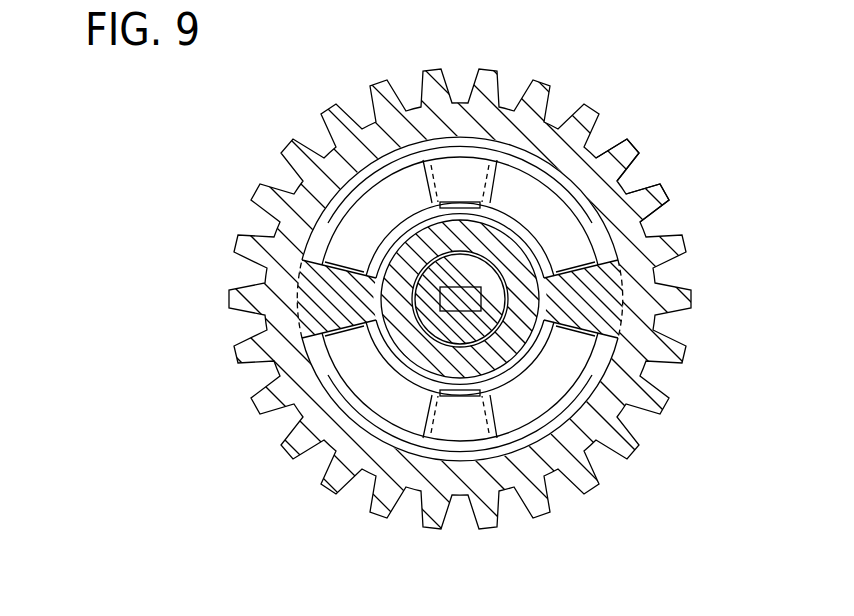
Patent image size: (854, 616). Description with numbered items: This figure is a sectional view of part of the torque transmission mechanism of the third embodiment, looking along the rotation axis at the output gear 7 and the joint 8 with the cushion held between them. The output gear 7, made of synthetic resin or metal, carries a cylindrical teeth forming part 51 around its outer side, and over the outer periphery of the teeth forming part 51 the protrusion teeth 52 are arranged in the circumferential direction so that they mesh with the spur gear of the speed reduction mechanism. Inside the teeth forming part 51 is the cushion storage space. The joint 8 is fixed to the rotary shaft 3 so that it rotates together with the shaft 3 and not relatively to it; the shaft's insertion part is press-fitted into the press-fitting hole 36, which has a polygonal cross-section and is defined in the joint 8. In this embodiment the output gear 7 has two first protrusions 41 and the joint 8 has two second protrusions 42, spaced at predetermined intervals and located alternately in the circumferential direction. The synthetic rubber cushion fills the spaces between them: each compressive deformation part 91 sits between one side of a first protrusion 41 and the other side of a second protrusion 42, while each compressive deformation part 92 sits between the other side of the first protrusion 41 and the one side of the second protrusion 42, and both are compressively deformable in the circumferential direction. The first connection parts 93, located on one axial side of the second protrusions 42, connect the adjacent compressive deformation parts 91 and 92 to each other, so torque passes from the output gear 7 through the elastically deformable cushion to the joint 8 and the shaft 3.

The output gear 7 is at (272, 128).
The teeth forming part 51 is at (592, 153).
The protrusion teeth 52 is at (666, 186).
The compressive deformation part 92 is at (387, 195).
The compressive deformation part 91 is at (562, 230).
The first protrusion 41 is at (593, 291).
The second protrusion 42 is at (457, 153).
The first connection part 93 is at (472, 170).
The press-fitting hole 36 is at (432, 333).
The joint 8 is at (480, 328).
The rotary shaft 3 is at (481, 302).